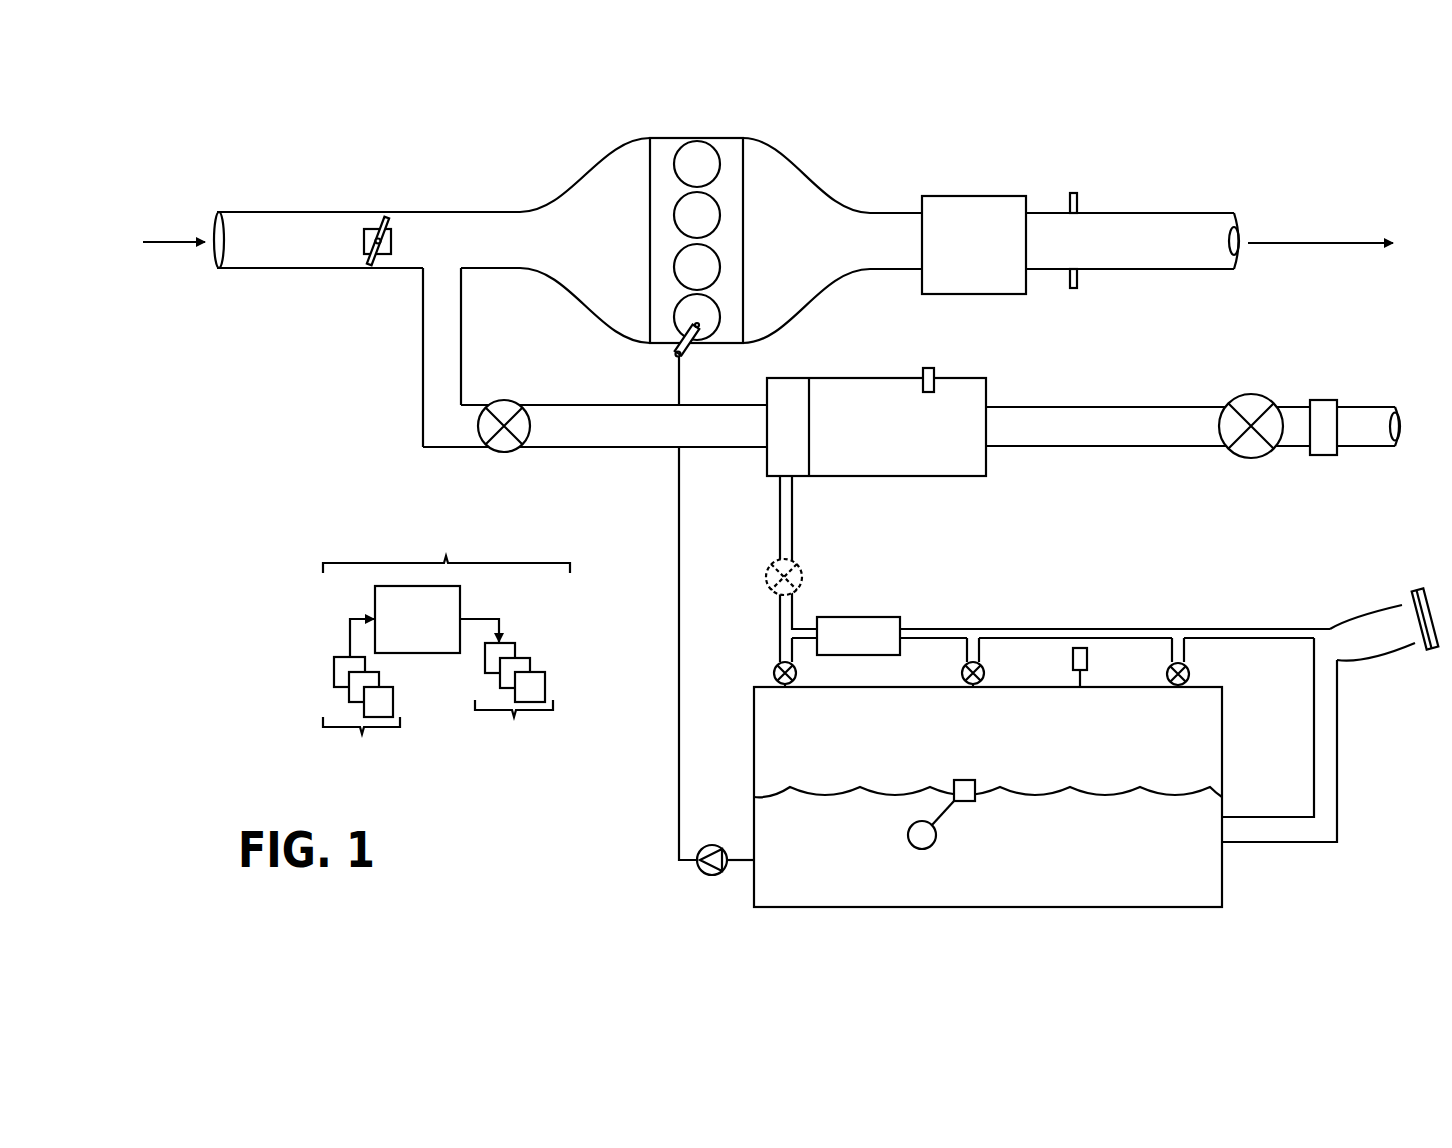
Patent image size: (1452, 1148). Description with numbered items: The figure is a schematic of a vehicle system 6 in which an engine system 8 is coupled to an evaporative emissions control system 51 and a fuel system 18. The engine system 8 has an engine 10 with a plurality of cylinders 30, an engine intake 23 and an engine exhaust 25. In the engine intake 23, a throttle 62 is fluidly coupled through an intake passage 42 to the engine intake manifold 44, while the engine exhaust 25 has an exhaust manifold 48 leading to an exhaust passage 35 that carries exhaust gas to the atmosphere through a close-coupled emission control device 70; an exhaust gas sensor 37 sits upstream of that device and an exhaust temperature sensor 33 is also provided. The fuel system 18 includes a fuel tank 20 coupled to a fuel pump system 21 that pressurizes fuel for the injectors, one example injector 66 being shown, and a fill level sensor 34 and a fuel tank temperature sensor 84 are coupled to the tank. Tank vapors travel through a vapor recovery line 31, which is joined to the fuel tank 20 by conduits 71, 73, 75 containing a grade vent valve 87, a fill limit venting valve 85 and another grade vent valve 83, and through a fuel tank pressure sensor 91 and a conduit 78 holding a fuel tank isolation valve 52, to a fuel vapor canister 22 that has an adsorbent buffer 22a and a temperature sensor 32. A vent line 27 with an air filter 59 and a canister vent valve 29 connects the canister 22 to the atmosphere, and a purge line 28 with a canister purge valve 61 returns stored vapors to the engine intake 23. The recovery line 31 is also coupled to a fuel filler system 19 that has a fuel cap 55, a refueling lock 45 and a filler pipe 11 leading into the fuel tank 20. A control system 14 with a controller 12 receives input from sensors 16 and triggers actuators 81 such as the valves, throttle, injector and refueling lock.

The vehicle system 6 is at (232, 146).
The engine system 8 is at (1037, 140).
The engine 10 is at (745, 222).
The fuel filler pipe 11 is at (1337, 737).
The controller 12 is at (417, 619).
The control system 14 is at (446, 544).
The sensors 16 is at (361, 698).
The fuel system 18 is at (1273, 860).
The fuel filler system 19 is at (1388, 588).
The fuel tank 20 is at (1222, 785).
The fuel pump system 21 is at (710, 845).
The fuel vapor canister 22 is at (988, 400).
The buffer 22a is at (793, 480).
The engine intake 23 is at (578, 165).
The engine exhaust 25 is at (911, 150).
The vent line 27 is at (1193, 426).
The purge line 28 is at (595, 426).
The canister vent valve 29 is at (1247, 395).
The cylinders 30 is at (718, 162).
The vapor recovery line 31 is at (1238, 627).
The temperature sensor 32 is at (927, 368).
The exhaust temperature sensor 33 is at (1070, 280).
The fuel level indicator 34 is at (973, 780).
The exhaust passage 35 is at (1192, 213).
The exhaust gas sensor 37 is at (1070, 201).
The intake passage 42 is at (413, 268).
The engine intake manifold 44 is at (432, 240).
The refueling lock 45 is at (1415, 645).
The exhaust manifold 48 is at (832, 240).
The emissions control system 51 is at (1383, 357).
The fuel tank isolation valve 52 is at (773, 590).
The fuel cap 55 is at (1418, 590).
The air filter 59 is at (1332, 400).
The canister purge valve 61 is at (506, 400).
The throttle 62 is at (392, 243).
The fuel injector 66 is at (682, 350).
The emission control device 70 is at (960, 197).
The conduit 71 is at (793, 650).
The conduit 73 is at (956, 662).
The conduit 75 is at (1172, 650).
The conduit 78 is at (778, 507).
The actuators 81 is at (506, 690).
The grade vent valve 83 is at (1189, 670).
The fuel tank temperature sensor 84 is at (1090, 660).
The fill limit venting valve 85 is at (985, 673).
The grade vent valve 87 is at (775, 672).
The fuel tank pressure sensor 91 is at (903, 627).